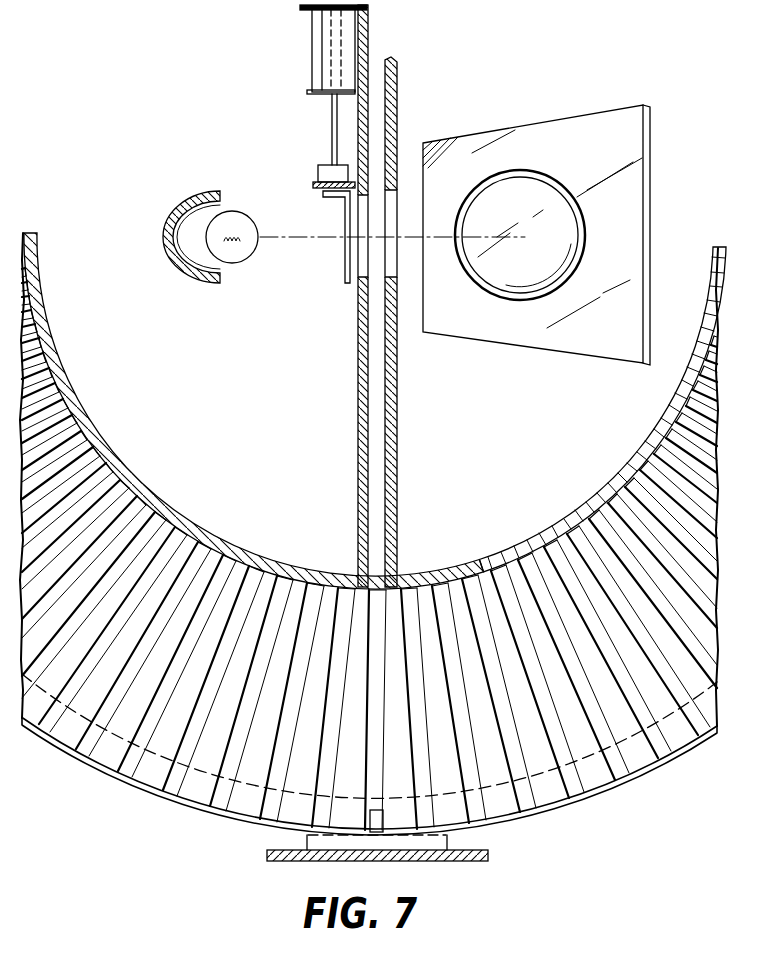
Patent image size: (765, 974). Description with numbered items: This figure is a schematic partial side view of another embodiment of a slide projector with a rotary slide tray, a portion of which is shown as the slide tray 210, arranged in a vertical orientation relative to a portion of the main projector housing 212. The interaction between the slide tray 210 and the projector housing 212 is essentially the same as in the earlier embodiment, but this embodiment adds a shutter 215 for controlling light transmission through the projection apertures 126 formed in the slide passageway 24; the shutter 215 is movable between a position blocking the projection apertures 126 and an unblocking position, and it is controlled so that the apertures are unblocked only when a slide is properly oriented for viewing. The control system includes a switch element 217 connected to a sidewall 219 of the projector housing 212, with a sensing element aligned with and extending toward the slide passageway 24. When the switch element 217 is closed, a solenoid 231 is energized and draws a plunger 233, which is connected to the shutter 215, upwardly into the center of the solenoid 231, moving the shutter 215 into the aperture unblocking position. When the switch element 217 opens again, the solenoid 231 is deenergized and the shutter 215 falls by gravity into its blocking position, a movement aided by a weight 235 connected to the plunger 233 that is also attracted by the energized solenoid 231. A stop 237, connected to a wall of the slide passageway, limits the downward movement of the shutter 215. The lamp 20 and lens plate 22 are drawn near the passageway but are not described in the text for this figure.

The rotary slide tray 210 is at (127, 795).
The main projector housing 212 is at (355, 435).
The slide passageway 24 is at (386, 527).
The projection apertures 126 is at (359, 283).
The shutter 215 is at (345, 266).
The solenoid 231 is at (322, 52).
The plunger 233 is at (332, 113).
The weight 235 is at (320, 167).
The stop 237 is at (316, 185).
The lamp with reflector 20 is at (204, 244).
The lens plate 22 is at (650, 141).
The switch element 217 is at (377, 810).
The sidewall 219 is at (475, 859).